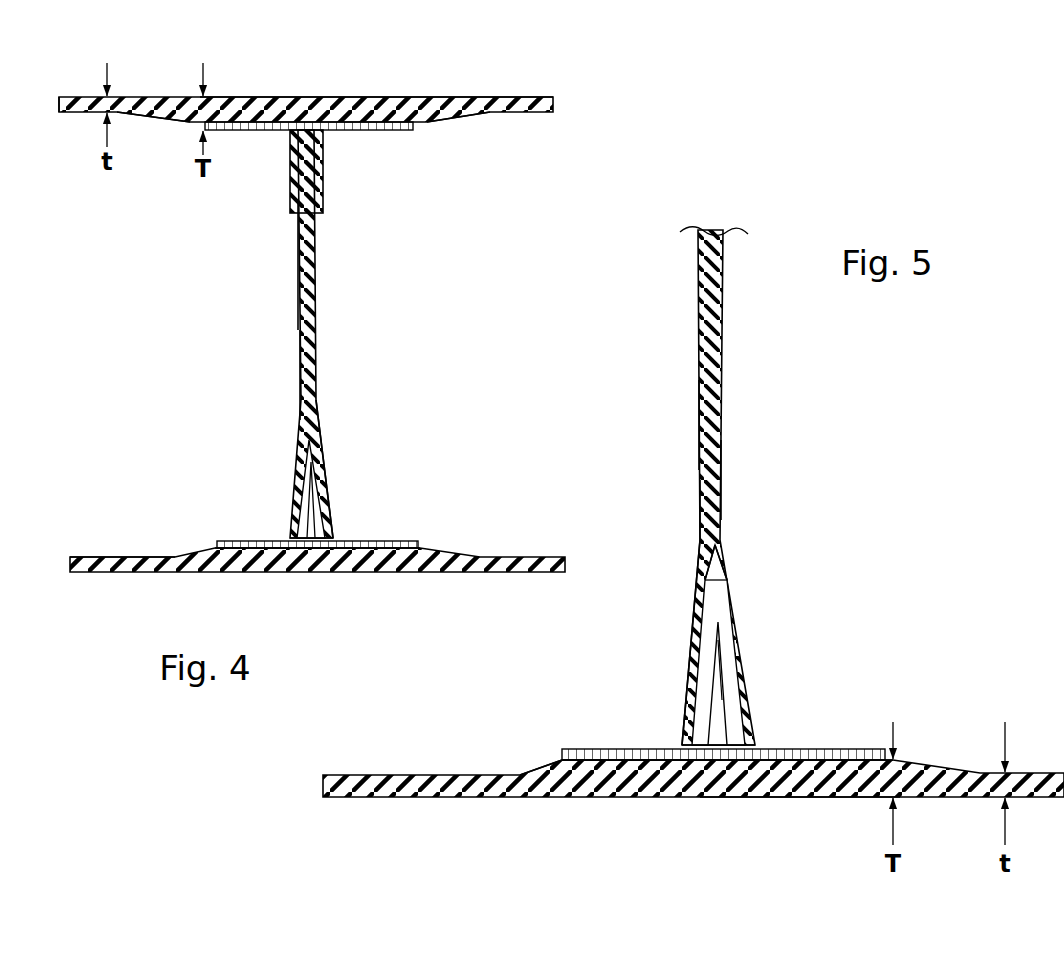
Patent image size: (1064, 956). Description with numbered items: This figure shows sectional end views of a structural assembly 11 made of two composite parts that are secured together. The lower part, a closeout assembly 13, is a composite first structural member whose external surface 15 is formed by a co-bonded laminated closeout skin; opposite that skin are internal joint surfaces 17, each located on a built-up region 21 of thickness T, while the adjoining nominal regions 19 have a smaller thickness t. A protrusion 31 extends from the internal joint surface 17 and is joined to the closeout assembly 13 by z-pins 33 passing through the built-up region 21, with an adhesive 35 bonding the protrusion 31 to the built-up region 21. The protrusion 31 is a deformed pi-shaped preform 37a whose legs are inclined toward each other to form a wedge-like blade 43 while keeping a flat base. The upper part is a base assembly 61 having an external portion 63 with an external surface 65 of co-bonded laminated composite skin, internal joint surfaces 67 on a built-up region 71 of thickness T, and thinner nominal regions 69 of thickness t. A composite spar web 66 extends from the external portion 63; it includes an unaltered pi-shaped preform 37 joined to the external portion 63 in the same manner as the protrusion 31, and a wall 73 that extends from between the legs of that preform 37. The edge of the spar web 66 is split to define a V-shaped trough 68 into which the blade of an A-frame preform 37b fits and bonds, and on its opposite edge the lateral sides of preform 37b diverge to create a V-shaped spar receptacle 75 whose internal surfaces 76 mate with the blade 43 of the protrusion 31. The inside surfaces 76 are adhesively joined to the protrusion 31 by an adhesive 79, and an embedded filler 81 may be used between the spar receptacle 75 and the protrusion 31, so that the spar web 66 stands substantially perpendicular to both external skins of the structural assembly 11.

In FIG. 4, the structural assembly 11 is at (478, 66).
In FIG. 4, the closeout assembly 13 is at (482, 497).
In FIG. 5, the closeout assembly 13 is at (997, 677).
In FIG. 4, the external surface 15 is at (405, 574).
In FIG. 5, the external surface 15 is at (578, 800).
In FIG. 5, the internal joint surfaces 17 is at (833, 757).
In FIG. 4, the nominal regions 19 is at (137, 556).
In FIG. 5, the built-up region 21 is at (775, 798).
In FIG. 4, the protrusions 31 is at (338, 500).
In FIG. 5, the protrusions 31 is at (783, 737).
In FIG. 4, the z-pins 33 is at (250, 541).
In FIG. 5, the z-pins 33 is at (610, 748).
In FIG. 5, the adhesive 35 is at (560, 757).
In FIG. 4, the pi-shaped preform 37 is at (292, 185).
In FIG. 4, the preform 37a is at (352, 538).
In FIG. 5, the preform 37a is at (762, 732).
In FIG. 4, the preform 37b is at (300, 370).
In FIG. 5, the preform 37b is at (700, 518).
In FIG. 4, the wedge-like blade 43 is at (334, 502).
In FIG. 5, the wedge-like blade 43 is at (718, 670).
In FIG. 4, the base assembly 61 is at (352, 197).
In FIG. 4, the external portion 63 is at (488, 100).
In FIG. 4, the external surface 65 is at (372, 97).
In FIG. 4, the spar webs 66 is at (298, 283).
In FIG. 5, the spar webs 66 is at (690, 400).
In FIG. 4, the internal joint surfaces 67 is at (440, 126).
In FIG. 5, the V-shaped trough 68 is at (722, 487).
In FIG. 4, the nominal regions 69 is at (77, 113).
In FIG. 4, the built-up region 71 is at (178, 122).
In FIG. 4, the wall 73 is at (314, 270).
In FIG. 5, the wall 73 is at (722, 375).
In FIG. 5, the V-shaped spar receptacle 75 is at (720, 548).
In FIG. 5, the internal surfaces 76 is at (690, 683).
In FIG. 4, the adhesive 79 is at (302, 480).
In FIG. 5, the adhesive 79 is at (697, 638).
In FIG. 4, the embedded filler 81 is at (328, 462).
In FIG. 5, the embedded filler 81 is at (717, 640).